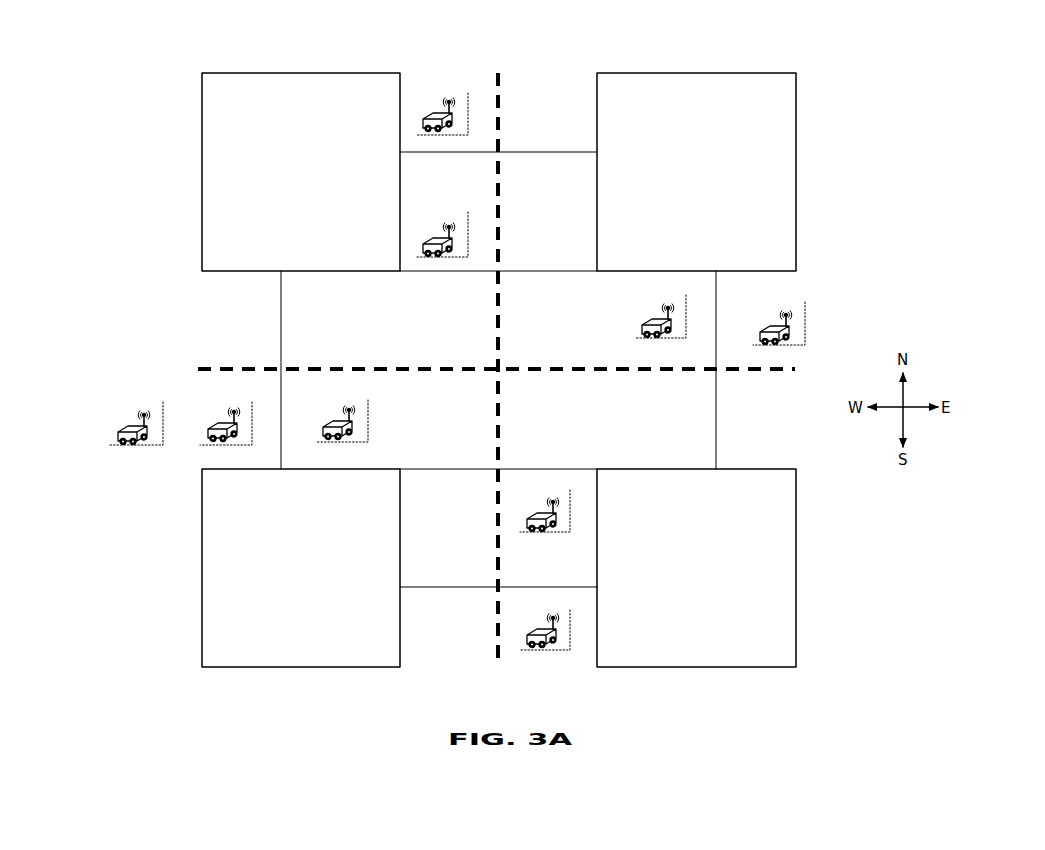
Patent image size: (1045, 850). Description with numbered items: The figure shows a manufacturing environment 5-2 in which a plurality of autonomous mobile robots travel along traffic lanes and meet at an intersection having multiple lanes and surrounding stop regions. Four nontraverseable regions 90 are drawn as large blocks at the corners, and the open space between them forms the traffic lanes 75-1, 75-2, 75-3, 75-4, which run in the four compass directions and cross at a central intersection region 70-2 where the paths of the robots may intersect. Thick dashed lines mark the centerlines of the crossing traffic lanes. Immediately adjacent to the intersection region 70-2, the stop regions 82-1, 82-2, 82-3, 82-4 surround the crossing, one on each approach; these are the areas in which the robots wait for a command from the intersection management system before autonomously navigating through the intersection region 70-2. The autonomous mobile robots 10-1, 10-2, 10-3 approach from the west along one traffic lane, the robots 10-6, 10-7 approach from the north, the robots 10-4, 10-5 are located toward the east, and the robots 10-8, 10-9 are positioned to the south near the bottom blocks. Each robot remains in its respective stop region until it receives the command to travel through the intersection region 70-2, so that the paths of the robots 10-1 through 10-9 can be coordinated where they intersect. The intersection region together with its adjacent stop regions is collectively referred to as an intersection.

The manufacturing environment 5-2 is at (884, 121).
The nontraverseable region 90 is at (738, 73).
The traffic lane 75-1 is at (795, 283).
The traffic lane 75-2 is at (755, 423).
The traffic lane 75-3 is at (470, 82).
The traffic lane 75-4 is at (552, 92).
The stop region 82-1 is at (568, 200).
The stop region 82-2 is at (687, 283).
The stop region 82-3 is at (440, 530).
The stop region 82-4 is at (297, 297).
The intersection region 70-2 is at (585, 290).
The autonomous mobile robot 10-1 is at (343, 437).
The autonomous mobile robot 10-2 is at (228, 438).
The autonomous mobile robot 10-3 is at (118, 435).
The autonomous mobile robot 10-4 is at (672, 324).
The autonomous mobile robot 10-5 is at (792, 330).
The autonomous mobile robot 10-6 is at (423, 247).
The autonomous mobile robot 10-7 is at (423, 122).
The autonomous mobile robot 10-8 is at (557, 517).
The autonomous mobile robot 10-9 is at (557, 628).